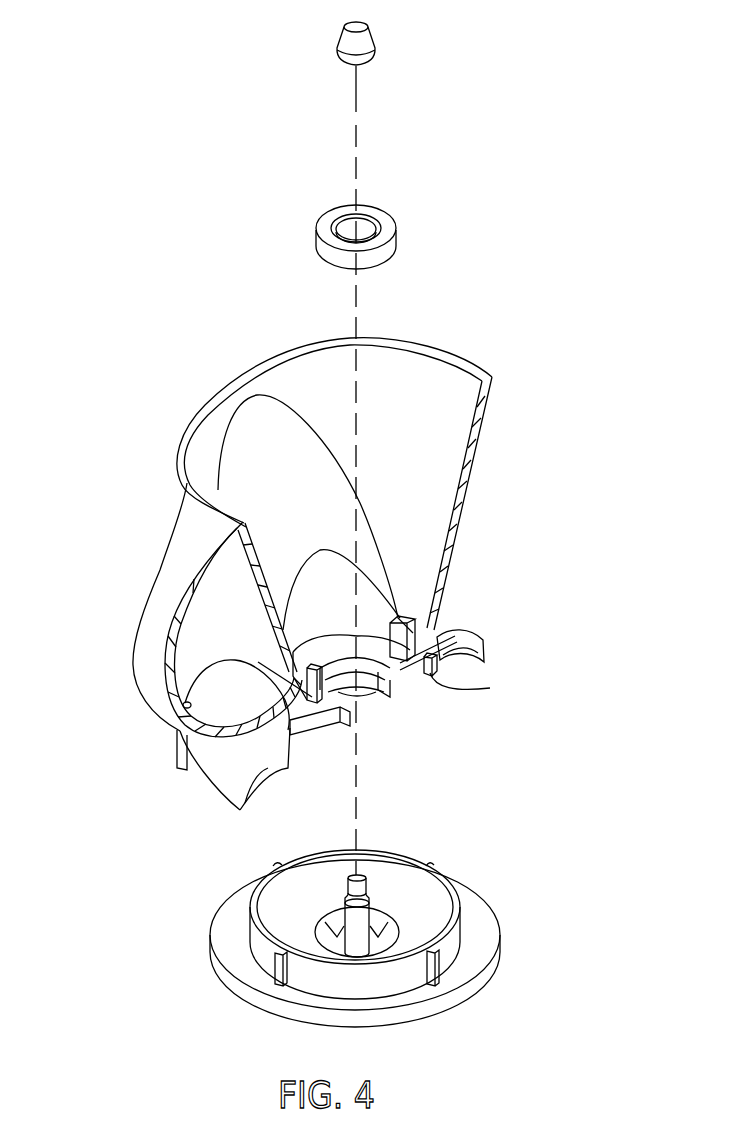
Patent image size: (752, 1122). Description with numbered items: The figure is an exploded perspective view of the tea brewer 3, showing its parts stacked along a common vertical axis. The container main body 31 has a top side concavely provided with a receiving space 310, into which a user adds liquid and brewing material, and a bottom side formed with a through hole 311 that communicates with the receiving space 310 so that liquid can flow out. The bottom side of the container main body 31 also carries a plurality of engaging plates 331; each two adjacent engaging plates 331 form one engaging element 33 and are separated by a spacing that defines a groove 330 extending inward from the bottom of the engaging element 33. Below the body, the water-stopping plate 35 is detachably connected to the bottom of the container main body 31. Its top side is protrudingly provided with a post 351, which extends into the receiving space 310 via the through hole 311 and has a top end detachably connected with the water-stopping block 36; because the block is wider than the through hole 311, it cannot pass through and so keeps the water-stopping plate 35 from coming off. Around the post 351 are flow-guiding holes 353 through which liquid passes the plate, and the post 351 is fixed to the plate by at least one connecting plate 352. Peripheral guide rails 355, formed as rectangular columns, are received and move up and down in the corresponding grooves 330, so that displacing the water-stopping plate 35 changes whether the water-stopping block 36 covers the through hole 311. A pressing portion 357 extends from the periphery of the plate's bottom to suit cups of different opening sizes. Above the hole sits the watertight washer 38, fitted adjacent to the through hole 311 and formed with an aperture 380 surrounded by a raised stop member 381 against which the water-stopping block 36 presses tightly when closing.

The tea brewer 3 is at (115, 206).
The water-stopping block 36 is at (363, 43).
The watertight washer 38 is at (377, 244).
The aperture 380 is at (360, 226).
The stop member 381 is at (330, 222).
The container main body 31 is at (468, 485).
The receiving space 310 is at (441, 393).
The through hole 311 is at (365, 695).
The engaging element 33 is at (548, 629).
The groove 330 is at (433, 695).
The engaging plates 331 is at (477, 656).
The water-stopping plate 35 is at (450, 940).
The post 351 is at (375, 918).
The connecting plate 352 is at (460, 925).
The flow-guiding hole 353 is at (314, 946).
The guide rail 355 is at (437, 967).
The pressing portion 357 is at (253, 983).